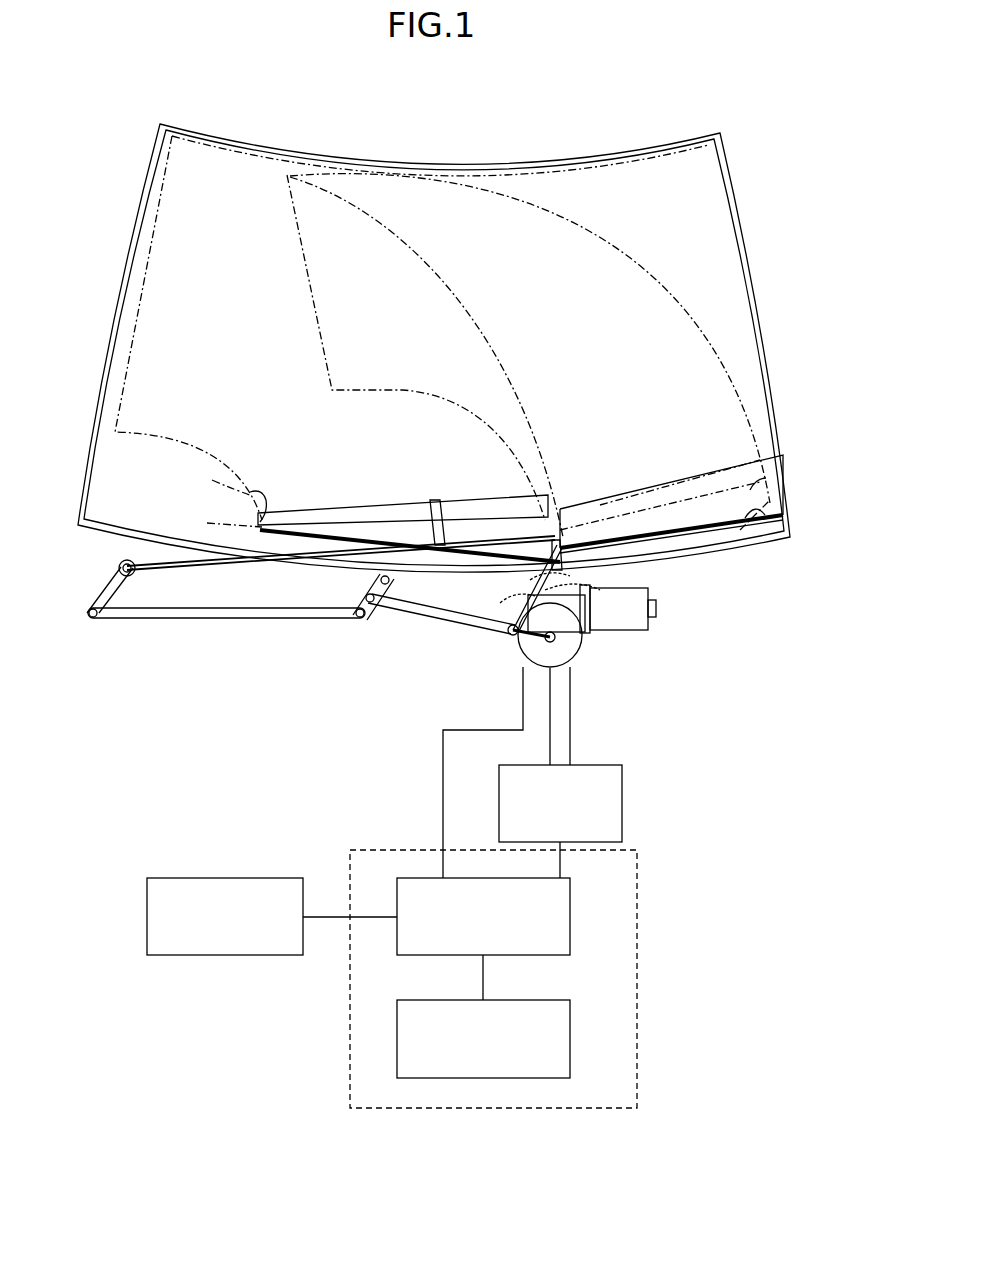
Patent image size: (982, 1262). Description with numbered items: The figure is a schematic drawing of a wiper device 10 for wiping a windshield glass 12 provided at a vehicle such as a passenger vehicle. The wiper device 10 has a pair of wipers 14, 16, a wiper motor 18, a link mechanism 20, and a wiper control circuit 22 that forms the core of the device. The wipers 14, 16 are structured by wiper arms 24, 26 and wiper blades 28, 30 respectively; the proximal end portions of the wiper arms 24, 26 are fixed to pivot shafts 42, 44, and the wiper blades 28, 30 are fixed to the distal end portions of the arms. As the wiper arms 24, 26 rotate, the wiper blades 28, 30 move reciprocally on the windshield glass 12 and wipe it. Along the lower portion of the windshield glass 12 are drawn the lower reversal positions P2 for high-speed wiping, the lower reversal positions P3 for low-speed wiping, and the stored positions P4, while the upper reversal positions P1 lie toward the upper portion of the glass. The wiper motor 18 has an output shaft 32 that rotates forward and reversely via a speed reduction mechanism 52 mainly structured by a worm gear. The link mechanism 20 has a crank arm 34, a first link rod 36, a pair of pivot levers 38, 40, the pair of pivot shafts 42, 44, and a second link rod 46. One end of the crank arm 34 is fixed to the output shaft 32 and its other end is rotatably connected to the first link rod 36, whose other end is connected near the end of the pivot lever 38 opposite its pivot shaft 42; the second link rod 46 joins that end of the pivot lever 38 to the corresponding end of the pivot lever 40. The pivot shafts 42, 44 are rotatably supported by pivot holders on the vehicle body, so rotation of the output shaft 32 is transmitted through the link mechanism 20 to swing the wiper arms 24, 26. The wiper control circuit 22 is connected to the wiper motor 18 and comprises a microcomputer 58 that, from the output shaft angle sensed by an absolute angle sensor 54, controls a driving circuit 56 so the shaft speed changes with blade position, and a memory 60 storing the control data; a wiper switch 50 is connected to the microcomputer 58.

The wiper device 10 is at (595, 134).
The windshield glass 12 is at (465, 160).
The wiper 14 is at (730, 517).
The wiper 16 is at (483, 530).
The wiper motor 18 is at (658, 609).
The link mechanism 20 is at (318, 644).
The wiper control circuit 22 is at (637, 880).
The wiper arm 24 is at (560, 538).
The wiper arm 26 is at (160, 562).
The wiper blade 28 is at (690, 527).
The wiper blade 30 is at (437, 545).
The output shaft 32 is at (583, 652).
The crank arm 34 is at (508, 640).
The first link rod 36 is at (440, 615).
The pivot lever 38 is at (362, 606).
The pivot lever 40 is at (90, 612).
The pivot shaft 42 is at (378, 580).
The pivot shaft 44 is at (120, 566).
The second link rod 46 is at (238, 622).
The wiper switch 50 is at (147, 916).
The speed reduction mechanism 52 is at (590, 633).
The absolute angle sensor 54 is at (565, 662).
The driving circuit 56 is at (622, 780).
The microcomputer 58 is at (570, 915).
The memory 60 is at (570, 1040).
The upper reversal positions P1 is at (160, 300).
The lower reversal positions at times of high-speed wiping P2 is at (795, 449).
The lower reversal positions at times of low-speed wiping P3 is at (795, 475).
The stored positions P4 is at (247, 557).